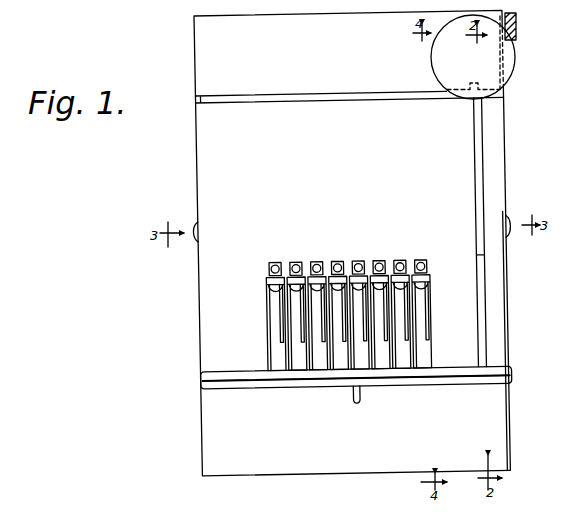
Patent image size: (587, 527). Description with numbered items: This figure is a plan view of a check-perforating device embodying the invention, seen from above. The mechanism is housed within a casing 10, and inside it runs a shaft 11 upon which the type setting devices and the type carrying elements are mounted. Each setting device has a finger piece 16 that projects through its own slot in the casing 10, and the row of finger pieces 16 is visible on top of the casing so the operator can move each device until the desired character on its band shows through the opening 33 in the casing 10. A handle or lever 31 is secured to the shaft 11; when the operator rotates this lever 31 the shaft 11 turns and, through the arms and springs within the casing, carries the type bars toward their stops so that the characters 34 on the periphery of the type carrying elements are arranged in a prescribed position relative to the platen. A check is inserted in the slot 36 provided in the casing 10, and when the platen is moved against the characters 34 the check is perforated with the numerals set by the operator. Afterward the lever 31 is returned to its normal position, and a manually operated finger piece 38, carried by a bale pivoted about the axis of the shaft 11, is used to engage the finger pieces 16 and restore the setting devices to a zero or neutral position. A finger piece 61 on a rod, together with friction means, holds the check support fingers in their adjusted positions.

The casing 10 is at (504, 158).
The shaft 11 is at (428, 362).
The finger piece 16 is at (301, 263).
The handle or lever 31 is at (478, 139).
The opening 33 is at (412, 261).
The characters 34 is at (427, 386).
The slot 36 is at (390, 92).
The finger piece 38 is at (359, 405).
The finger piece 61 is at (520, 19).